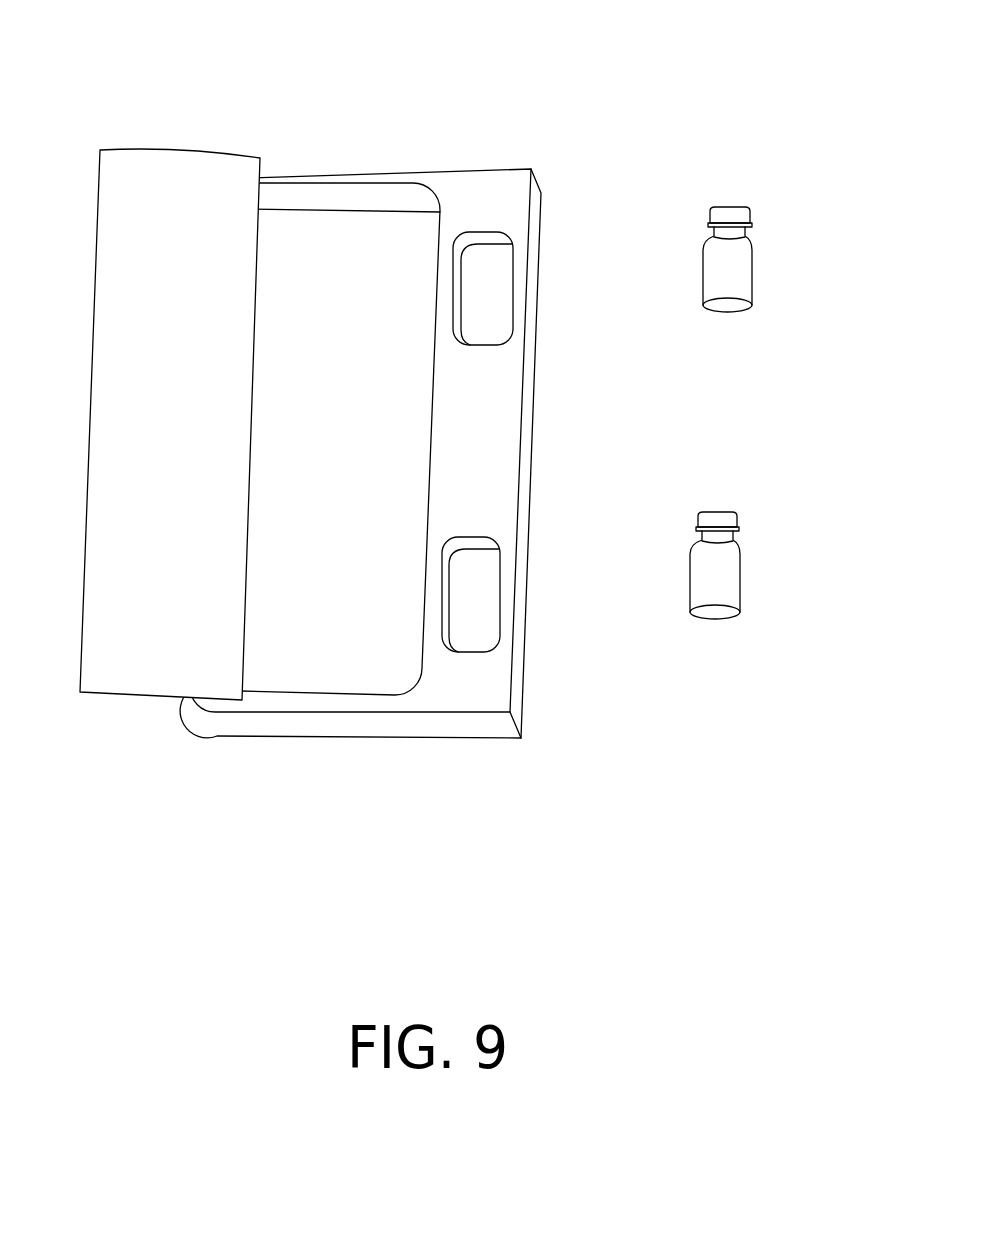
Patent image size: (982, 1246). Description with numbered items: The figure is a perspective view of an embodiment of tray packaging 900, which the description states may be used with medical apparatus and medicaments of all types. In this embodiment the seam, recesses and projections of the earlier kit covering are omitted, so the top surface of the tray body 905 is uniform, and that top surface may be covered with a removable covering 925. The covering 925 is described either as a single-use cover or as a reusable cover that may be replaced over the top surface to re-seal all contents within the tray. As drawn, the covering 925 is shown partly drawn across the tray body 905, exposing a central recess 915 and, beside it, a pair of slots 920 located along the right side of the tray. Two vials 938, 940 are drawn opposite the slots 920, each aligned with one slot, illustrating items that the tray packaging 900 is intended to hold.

The tray packaging 900 is at (465, 419).
The tray body 905 is at (405, 720).
The recess 915 is at (292, 218).
The vial slots 920 is at (485, 551).
The removable covering 925 is at (165, 165).
The first vial 938 is at (470, 253).
The second vial 940 is at (459, 559).